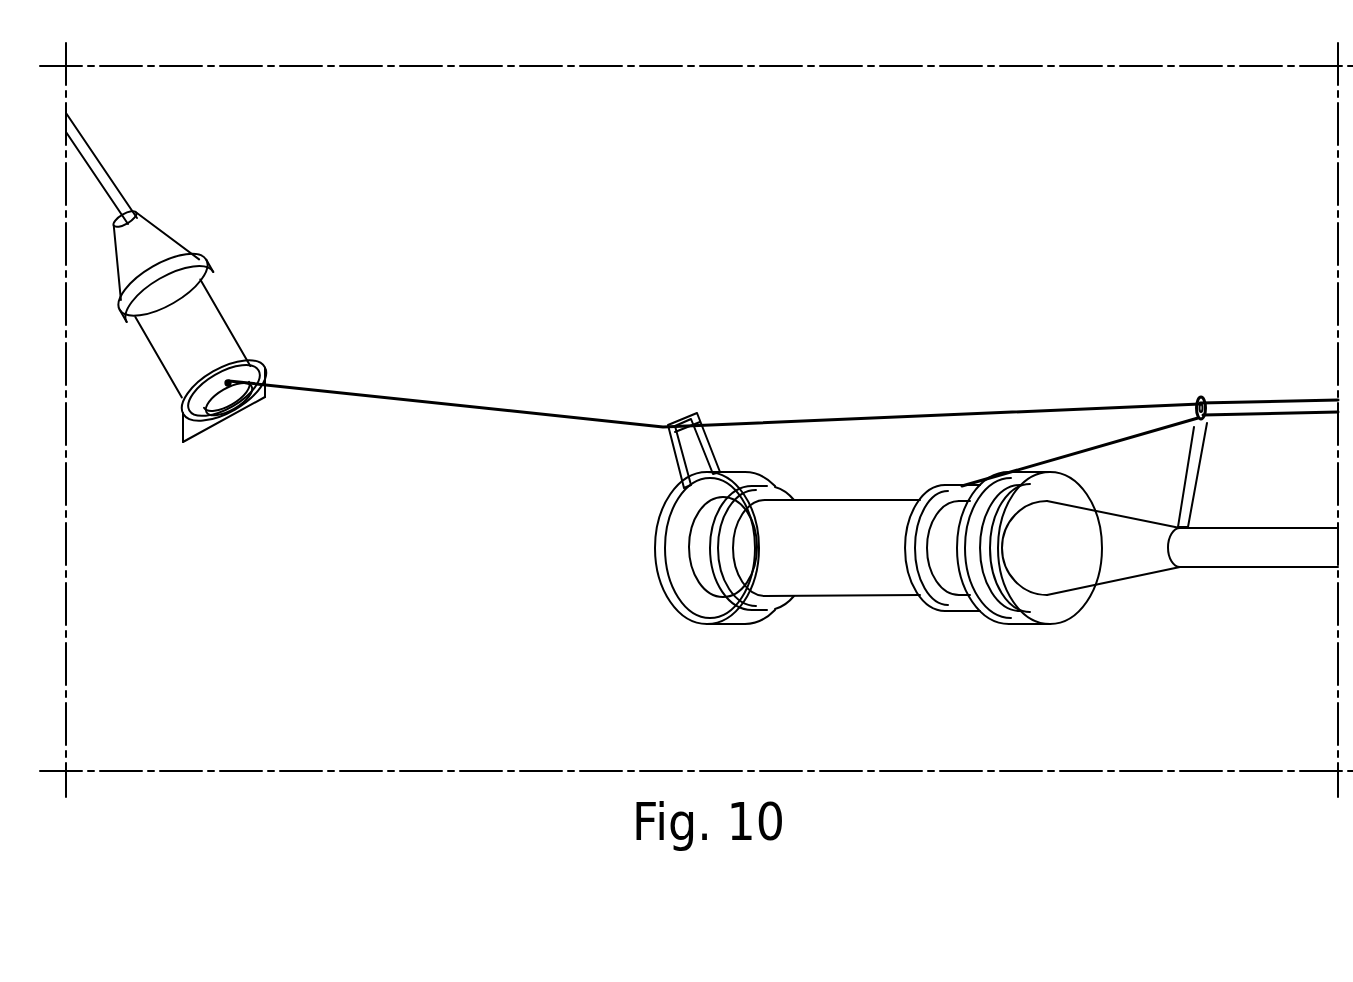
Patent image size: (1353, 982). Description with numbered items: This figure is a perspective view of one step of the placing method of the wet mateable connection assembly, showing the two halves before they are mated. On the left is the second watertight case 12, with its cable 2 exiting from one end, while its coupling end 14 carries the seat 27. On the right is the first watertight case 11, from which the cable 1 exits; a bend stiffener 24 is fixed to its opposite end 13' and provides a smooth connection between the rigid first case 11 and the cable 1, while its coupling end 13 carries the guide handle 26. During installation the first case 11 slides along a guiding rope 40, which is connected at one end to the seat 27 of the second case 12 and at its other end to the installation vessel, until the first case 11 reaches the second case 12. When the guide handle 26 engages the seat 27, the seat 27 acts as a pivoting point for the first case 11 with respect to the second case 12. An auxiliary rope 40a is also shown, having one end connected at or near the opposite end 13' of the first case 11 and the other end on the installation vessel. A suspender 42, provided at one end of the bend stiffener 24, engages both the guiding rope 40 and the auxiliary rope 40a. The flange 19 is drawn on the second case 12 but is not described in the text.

The cable 1 is at (1253, 558).
The cable 2 is at (85, 160).
The first watertight case 11 is at (835, 572).
The second watertight case 12 is at (207, 327).
The first coupling end 13 is at (697, 553).
The first opposite end 13' is at (1003, 567).
The second coupling end 14 is at (218, 422).
The flange 19 is at (243, 393).
The bend stiffener 24 is at (1150, 570).
The guide handle 26 is at (707, 430).
The seat 27 is at (222, 384).
The guiding rope 40 is at (452, 400).
The auxiliary rope 40a is at (1308, 415).
The suspender 42 is at (1191, 470).